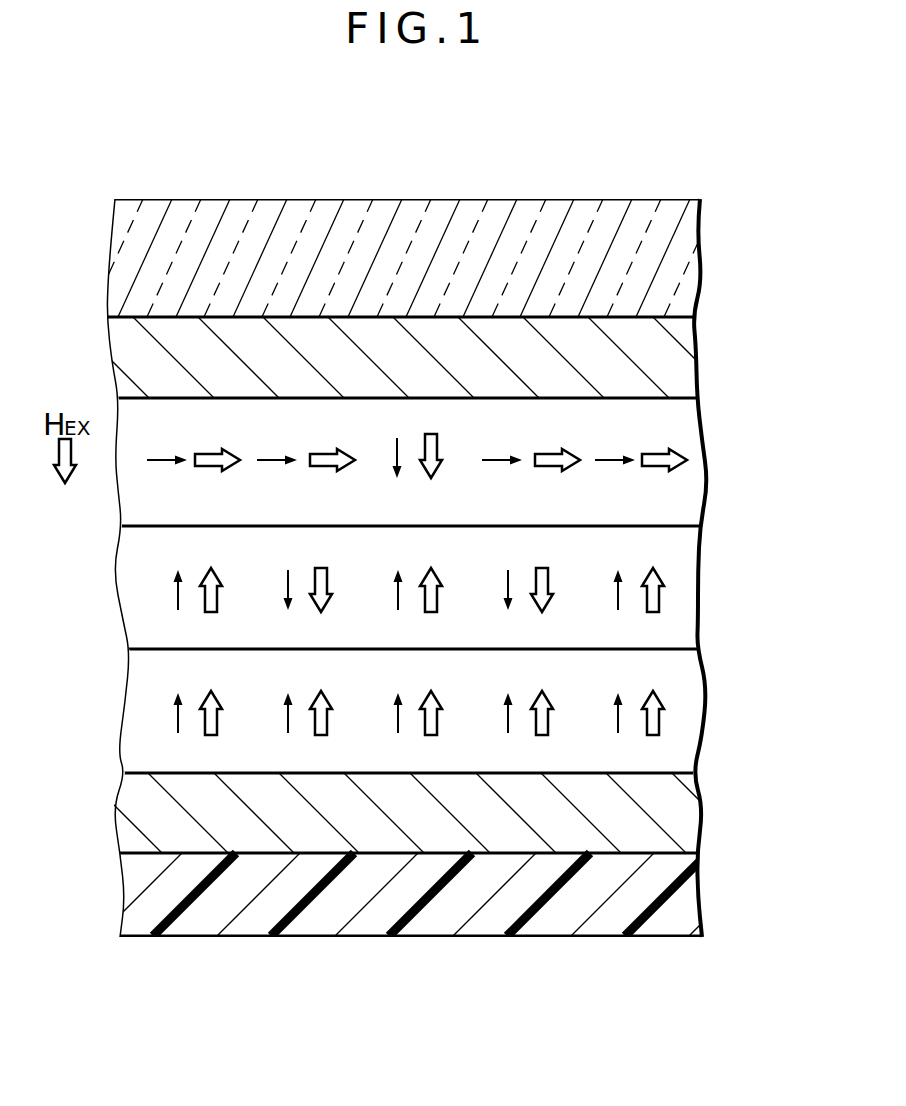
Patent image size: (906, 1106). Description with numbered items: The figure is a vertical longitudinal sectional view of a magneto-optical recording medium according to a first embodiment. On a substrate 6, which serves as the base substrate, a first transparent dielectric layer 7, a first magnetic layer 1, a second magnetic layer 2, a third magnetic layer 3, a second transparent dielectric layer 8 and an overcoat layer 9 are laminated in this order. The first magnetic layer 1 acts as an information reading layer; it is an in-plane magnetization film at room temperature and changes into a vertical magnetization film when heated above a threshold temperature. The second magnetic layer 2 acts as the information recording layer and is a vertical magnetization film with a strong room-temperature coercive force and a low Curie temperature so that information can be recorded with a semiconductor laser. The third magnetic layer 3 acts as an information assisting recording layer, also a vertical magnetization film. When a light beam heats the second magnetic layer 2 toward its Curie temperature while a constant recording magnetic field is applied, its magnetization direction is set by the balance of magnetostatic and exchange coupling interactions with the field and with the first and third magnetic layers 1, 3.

The first magnetic layer 1 is at (693, 457).
The second magnetic layer 2 is at (680, 579).
The third magnetic layer 3 is at (680, 702).
The substrate 6 is at (690, 257).
The first transparent dielectric layer 7 is at (683, 343).
The second transparent dielectric layer 8 is at (680, 808).
The overcoat layer 9 is at (685, 898).